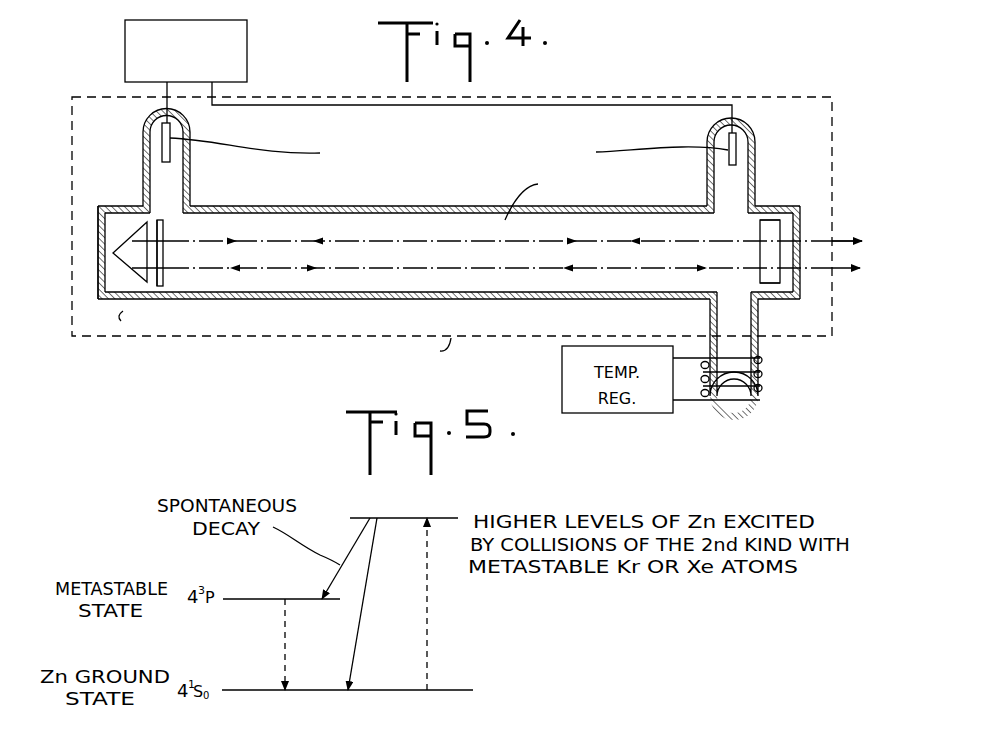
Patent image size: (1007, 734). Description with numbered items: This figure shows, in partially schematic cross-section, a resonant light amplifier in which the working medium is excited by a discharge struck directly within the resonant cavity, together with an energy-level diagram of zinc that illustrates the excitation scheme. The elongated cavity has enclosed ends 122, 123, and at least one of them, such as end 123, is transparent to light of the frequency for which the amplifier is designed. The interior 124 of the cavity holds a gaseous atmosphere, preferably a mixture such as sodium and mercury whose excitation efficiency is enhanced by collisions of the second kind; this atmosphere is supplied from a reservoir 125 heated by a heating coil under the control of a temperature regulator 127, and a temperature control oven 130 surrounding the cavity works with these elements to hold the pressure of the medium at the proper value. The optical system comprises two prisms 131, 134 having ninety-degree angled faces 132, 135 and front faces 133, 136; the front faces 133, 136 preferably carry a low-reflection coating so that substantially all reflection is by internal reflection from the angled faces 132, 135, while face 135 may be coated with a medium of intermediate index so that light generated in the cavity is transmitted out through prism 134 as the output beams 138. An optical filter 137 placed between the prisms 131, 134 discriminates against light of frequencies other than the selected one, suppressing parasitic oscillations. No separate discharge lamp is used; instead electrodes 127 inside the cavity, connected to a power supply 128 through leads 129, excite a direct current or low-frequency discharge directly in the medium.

The enclosed end 122 is at (98, 243).
The enclosed end 123 is at (800, 221).
The interior of the cavity 124 is at (343, 218).
The reservoir 125 is at (758, 346).
The electrodes 127 is at (170, 157).
The power supply 128 is at (249, 58).
The leads 129 is at (167, 106).
The temperature control oven 130 is at (323, 338).
The prism 131 is at (133, 275).
The angled face 132 is at (147, 231).
The front face 133 is at (163, 253).
The prism 134 is at (769, 217).
The angled face 135 is at (773, 283).
The front face 136 is at (760, 228).
The optical filter 137 is at (163, 230).
The output beams 138 is at (838, 243).